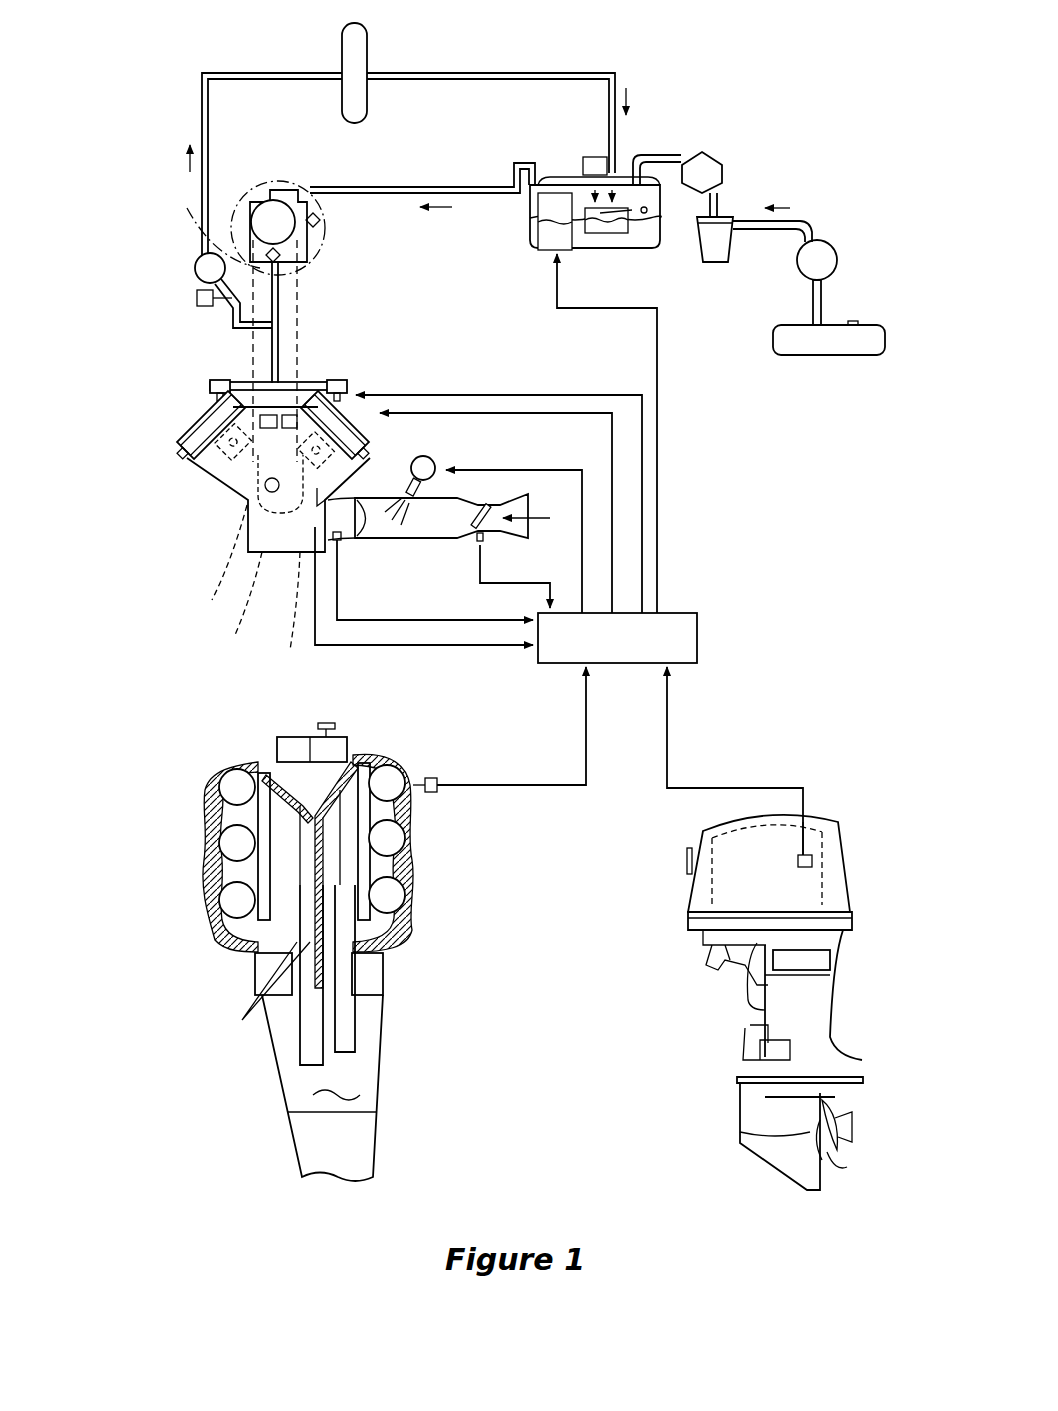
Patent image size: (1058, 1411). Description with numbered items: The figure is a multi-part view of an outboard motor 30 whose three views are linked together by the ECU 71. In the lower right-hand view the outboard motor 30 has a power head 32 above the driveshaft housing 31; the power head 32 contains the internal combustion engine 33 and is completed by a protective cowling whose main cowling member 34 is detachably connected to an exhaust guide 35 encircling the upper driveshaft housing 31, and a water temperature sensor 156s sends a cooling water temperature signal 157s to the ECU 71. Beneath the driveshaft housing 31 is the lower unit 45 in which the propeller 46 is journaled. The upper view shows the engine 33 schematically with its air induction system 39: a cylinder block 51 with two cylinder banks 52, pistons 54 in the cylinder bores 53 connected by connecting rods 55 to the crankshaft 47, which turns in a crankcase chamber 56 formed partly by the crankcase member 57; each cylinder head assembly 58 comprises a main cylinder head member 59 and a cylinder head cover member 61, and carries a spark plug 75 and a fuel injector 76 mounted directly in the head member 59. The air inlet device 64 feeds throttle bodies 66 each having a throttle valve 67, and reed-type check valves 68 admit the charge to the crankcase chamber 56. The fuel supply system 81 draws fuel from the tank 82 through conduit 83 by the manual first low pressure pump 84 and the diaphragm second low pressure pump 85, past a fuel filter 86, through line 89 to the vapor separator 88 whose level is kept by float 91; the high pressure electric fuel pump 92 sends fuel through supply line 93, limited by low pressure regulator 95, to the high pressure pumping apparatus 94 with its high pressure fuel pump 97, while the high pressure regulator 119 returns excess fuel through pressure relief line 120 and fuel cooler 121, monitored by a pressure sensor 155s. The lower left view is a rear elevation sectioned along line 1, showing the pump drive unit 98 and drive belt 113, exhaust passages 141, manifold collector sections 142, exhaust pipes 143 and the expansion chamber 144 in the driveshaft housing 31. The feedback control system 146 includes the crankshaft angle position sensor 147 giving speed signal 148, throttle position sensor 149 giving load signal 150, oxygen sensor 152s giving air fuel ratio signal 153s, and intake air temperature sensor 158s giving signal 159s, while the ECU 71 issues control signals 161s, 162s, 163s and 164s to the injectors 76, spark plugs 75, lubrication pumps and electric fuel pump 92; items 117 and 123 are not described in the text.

The section line 1 is at (183, 458).
The outboard motor 30 is at (828, 800).
The driveshaft housing 31 is at (803, 1013).
The power head 32 is at (872, 923).
The internal combustion engine 33 is at (850, 893).
The main cowling member 34 is at (692, 880).
The exhaust guide 35 is at (830, 960).
The air induction system 39 is at (445, 496).
The lower unit 45 is at (750, 1105).
The propeller 46 is at (840, 1170).
The crankshaft 47 is at (282, 556).
The cylinder block 51 is at (217, 475).
The cylinder banks 52 is at (345, 480).
The cylinder bores 53 is at (212, 782).
The pistons 54 is at (228, 490).
The connecting rods 55 is at (242, 528).
The crankcase chamber 56 is at (248, 560).
The crankcase member 57 is at (250, 545).
The cylinder head assembly 58 is at (120, 462).
The main cylinder head member 59 is at (366, 442).
The cylinder head cover member 61 is at (378, 405).
The air silencing and inlet device 64 is at (528, 494).
The throttle bodies 66 is at (418, 525).
The throttle valve 67 is at (478, 536).
The reed-type check valve 68 is at (342, 540).
The ECU 71 is at (698, 640).
The spark plug 75 is at (340, 400).
The fuel injector 76 is at (337, 388).
The fuel supply system 81 is at (654, 50).
The main fuel supply tank 82 is at (836, 356).
The conduit 83 is at (824, 305).
The first low pressure pump 84 is at (830, 242).
The second low pressure pump 85 is at (724, 173).
The fuel filter 86 is at (726, 248).
The vapor separator 88 is at (662, 245).
The line 89 is at (655, 153).
The float 91 is at (608, 228).
The high pressure electric fuel pump 92 is at (563, 237).
The fuel supply line 93 is at (380, 187).
The high pressure pumping apparatus 94 is at (262, 176).
The low pressure regulator 95 is at (592, 157).
The high pressure fuel pump 97 is at (277, 215).
The pump drive unit 98 is at (350, 745).
The drive belt 113 is at (187, 208).
The fuel rail 117 is at (280, 382).
The high pressure regulator 119 is at (196, 262).
The pressure relief line 120 is at (530, 72).
The fuel heat exchanger or cooler 121 is at (360, 47).
The fuel supply line 123 is at (490, 893).
The exhaust passage 141 is at (292, 810).
The manifold collector section 142 is at (262, 993).
The exhaust pipes 143 is at (297, 1040).
The expansion chamber 144 is at (333, 1086).
The feedback control system 146 is at (713, 556).
The crankshaft angle position sensor 147 is at (300, 575).
The crankshaft rotational speed signal 148 is at (408, 647).
The throttle position sensor 149 is at (497, 538).
The throttle position signal 150 is at (520, 588).
The oxygen sensor 152s is at (440, 780).
The air fuel ratio signal 153s is at (588, 745).
The pressure sensor 155s is at (197, 298).
The water temperature sensor 156s is at (812, 860).
The cooling water temperature signal 157s is at (690, 754).
The intake air temperature sensor 158s is at (340, 542).
The intake air temperature signal 159s is at (430, 620).
The fuel injector control signal 161s is at (527, 394).
The spark plug control signal 162s is at (520, 414).
The lubrication pump control signal 163s is at (530, 470).
The electric fuel pump control signal 164s is at (660, 377).